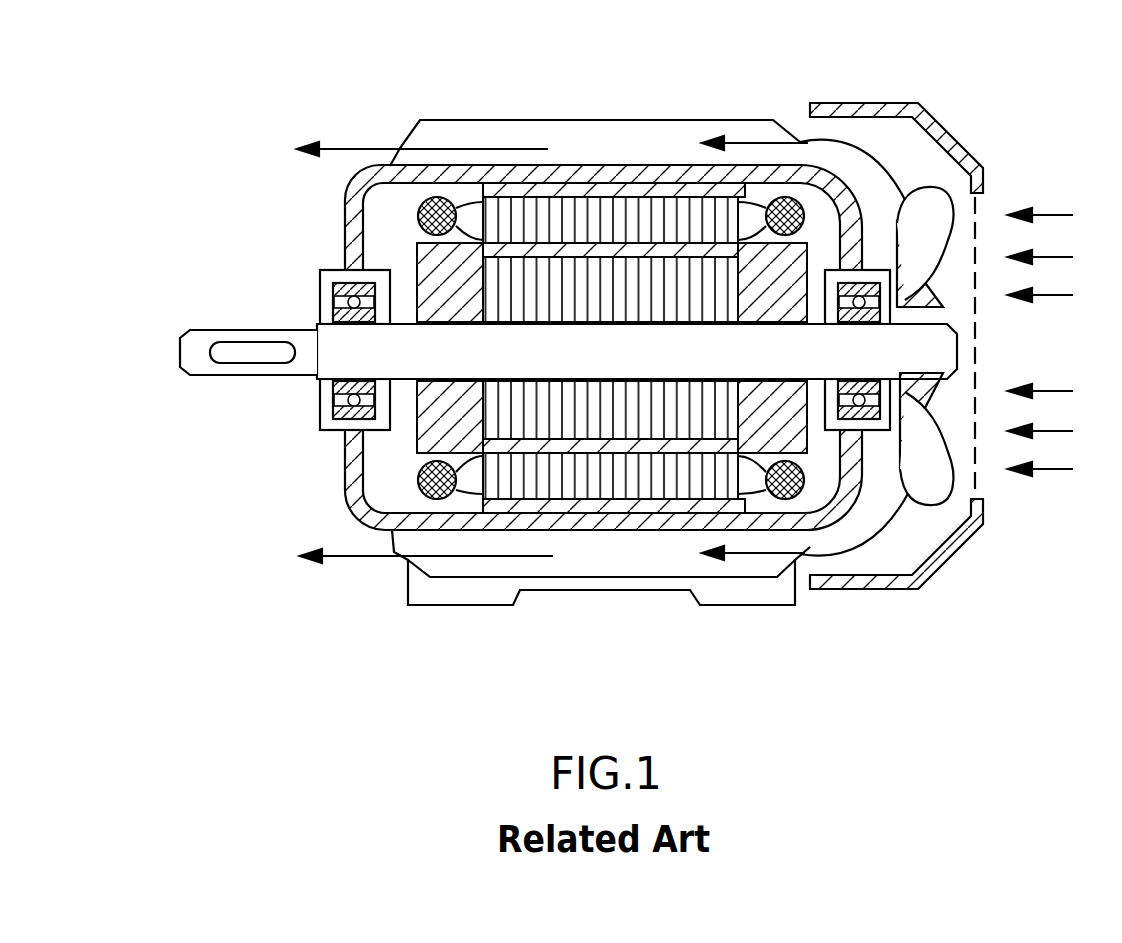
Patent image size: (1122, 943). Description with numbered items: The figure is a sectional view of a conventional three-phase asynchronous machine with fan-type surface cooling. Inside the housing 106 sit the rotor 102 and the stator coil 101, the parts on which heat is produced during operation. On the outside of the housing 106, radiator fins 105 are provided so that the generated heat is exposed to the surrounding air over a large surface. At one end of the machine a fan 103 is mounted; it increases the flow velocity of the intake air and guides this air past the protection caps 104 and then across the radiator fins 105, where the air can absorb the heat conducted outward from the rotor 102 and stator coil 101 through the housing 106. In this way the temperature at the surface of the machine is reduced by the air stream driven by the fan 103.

The stator coil 101 is at (450, 212).
The rotor 102 is at (543, 290).
The fan 103 is at (927, 203).
The protection caps 104 is at (843, 580).
The radiator fins 105 is at (437, 567).
The housing 106 is at (350, 506).